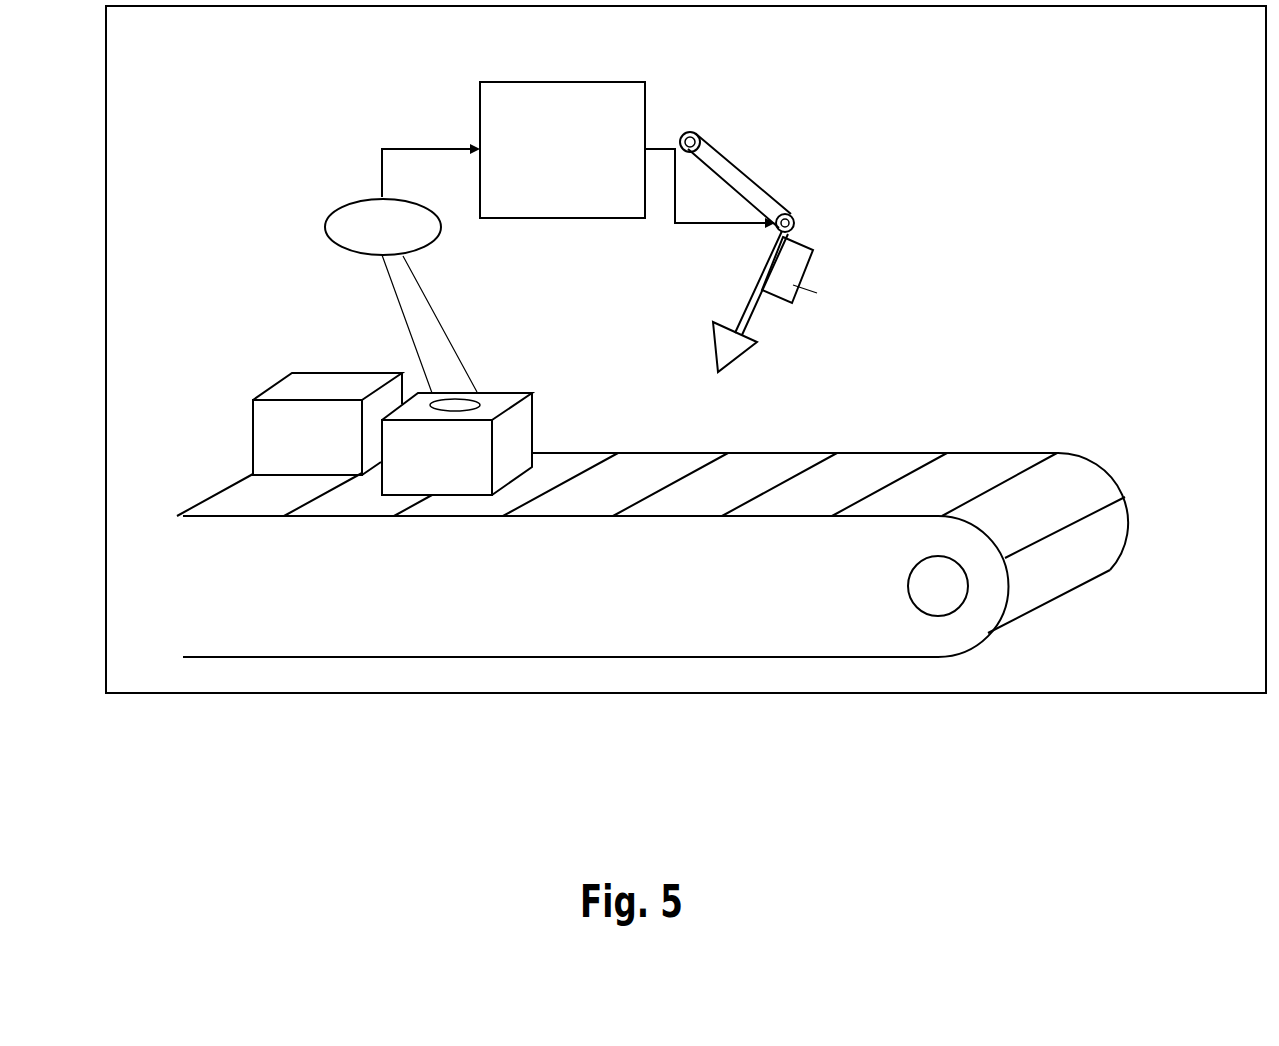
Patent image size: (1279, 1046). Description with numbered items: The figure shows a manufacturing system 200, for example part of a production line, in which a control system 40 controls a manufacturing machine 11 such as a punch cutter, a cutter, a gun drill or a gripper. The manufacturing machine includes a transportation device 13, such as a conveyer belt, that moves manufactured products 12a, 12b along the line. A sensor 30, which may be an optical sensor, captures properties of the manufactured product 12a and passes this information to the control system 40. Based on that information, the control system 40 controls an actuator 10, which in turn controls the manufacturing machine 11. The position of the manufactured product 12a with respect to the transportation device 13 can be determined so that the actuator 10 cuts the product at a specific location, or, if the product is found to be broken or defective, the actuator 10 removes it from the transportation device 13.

The actuator 10 is at (808, 267).
The manufacturing machine 11 is at (757, 192).
The manufactured product 12a is at (537, 423).
The manufactured product 12b is at (267, 392).
The transportation device 13 is at (1135, 483).
The sensor 30 is at (323, 232).
The control system 40 is at (467, 90).
The manufacturing system 200 is at (593, 700).